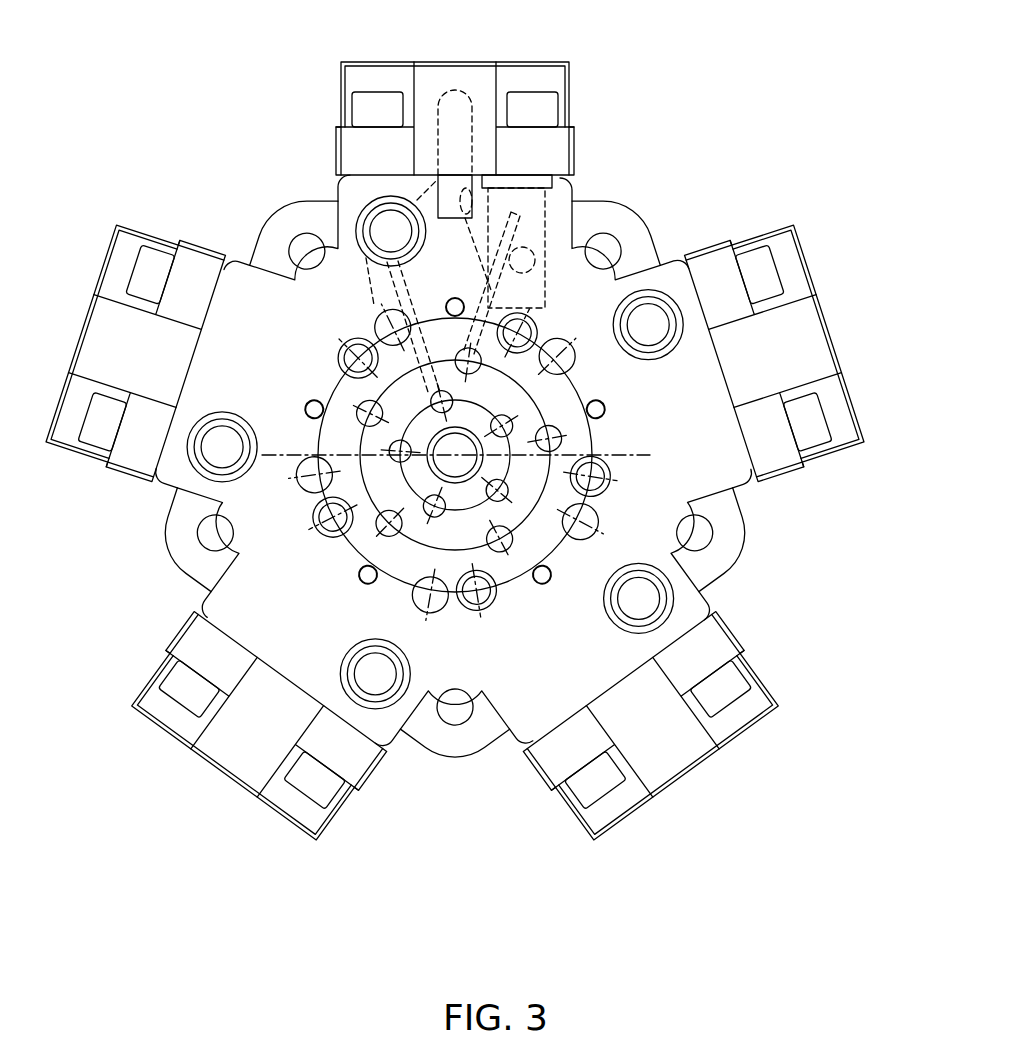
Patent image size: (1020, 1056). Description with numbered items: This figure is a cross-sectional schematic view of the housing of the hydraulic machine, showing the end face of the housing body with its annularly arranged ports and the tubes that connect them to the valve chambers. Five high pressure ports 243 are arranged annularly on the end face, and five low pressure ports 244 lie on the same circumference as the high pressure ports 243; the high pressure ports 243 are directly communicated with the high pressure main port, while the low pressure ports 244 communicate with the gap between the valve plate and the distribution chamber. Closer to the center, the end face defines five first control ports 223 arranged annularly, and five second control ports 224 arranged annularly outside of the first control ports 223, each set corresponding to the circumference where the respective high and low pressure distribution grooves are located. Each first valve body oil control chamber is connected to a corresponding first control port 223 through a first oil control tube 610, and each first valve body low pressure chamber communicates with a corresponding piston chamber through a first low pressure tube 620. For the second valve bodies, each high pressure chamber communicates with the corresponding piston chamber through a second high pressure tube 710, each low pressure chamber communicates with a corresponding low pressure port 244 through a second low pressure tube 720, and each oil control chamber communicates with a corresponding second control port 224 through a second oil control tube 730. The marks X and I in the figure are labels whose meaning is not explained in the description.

The second high pressure tube 710 is at (420, 198).
The second low pressure tube 720 is at (372, 292).
The second oil control tube 730 is at (427, 356).
The first oil control tube 610 is at (537, 232).
The first low pressure tube 620 is at (487, 200).
The first control port 223 is at (528, 325).
The high pressure port 243 is at (633, 320).
The low pressure port 244 is at (373, 318).
The second control port 224 is at (506, 489).
The axis X is at (391, 228).
The detail region I is at (520, 236).